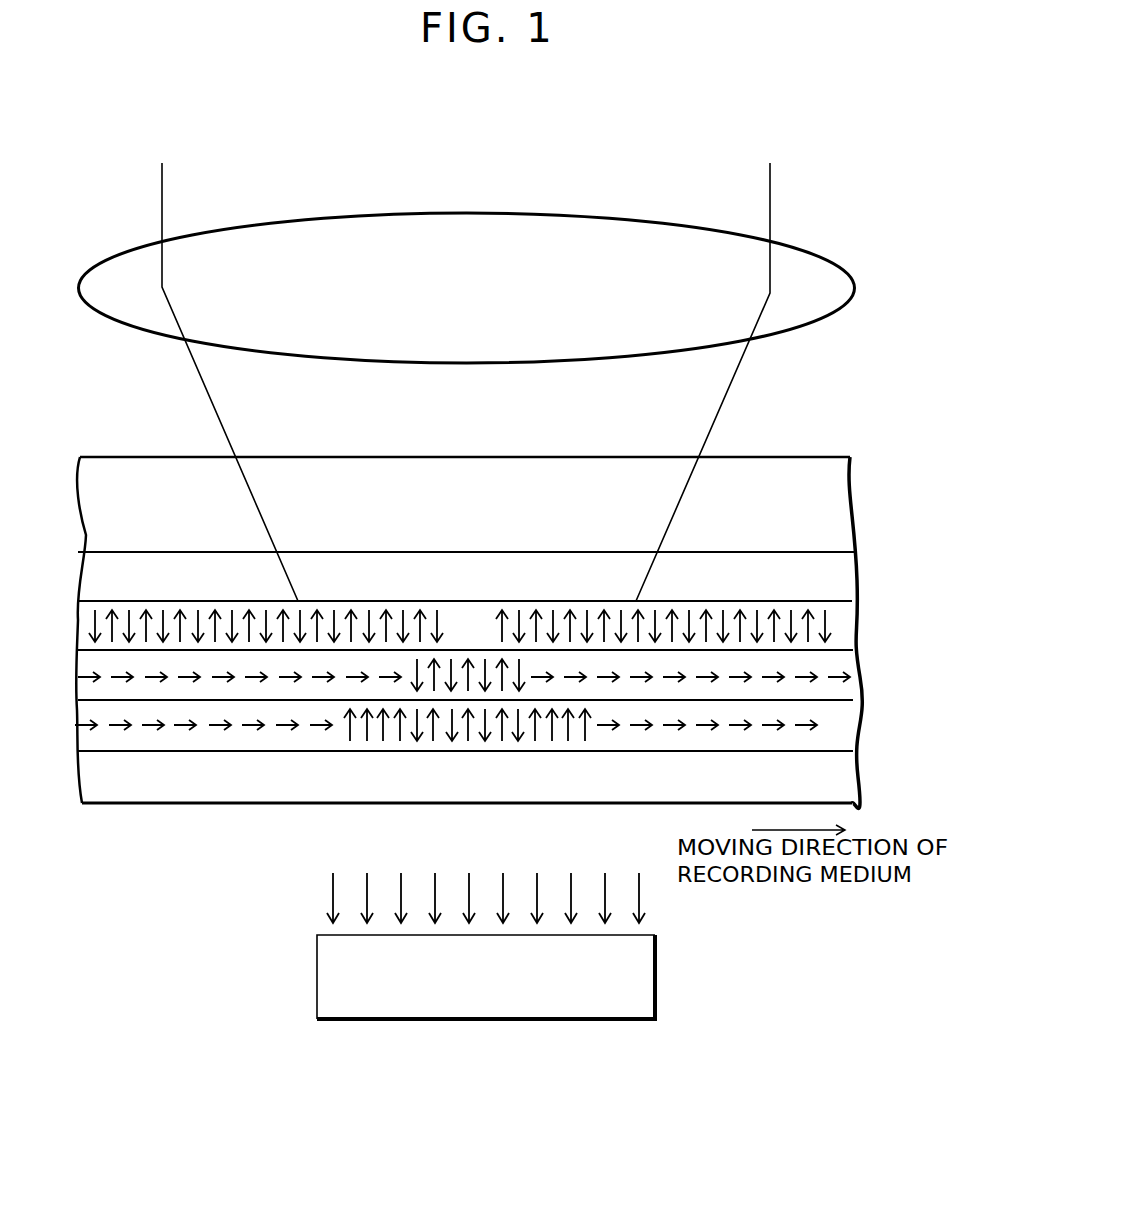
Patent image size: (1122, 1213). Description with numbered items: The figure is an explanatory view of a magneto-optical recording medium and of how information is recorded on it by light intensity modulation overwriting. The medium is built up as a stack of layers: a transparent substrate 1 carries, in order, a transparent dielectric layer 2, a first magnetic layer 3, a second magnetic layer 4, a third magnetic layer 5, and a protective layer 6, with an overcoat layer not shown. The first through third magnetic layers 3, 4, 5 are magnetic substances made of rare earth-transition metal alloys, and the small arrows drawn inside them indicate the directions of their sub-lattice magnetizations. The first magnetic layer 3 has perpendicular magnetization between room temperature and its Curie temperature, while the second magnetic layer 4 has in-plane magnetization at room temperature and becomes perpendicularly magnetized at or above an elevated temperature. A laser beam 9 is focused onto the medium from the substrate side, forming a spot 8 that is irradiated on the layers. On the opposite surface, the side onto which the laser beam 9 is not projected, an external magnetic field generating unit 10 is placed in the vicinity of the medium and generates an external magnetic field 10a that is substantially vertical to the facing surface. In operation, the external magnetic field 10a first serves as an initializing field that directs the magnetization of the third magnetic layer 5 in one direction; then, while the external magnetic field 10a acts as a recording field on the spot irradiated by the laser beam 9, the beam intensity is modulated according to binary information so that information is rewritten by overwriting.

The transparent substrate 1 is at (835, 492).
The transparent dielectric layer 2 is at (847, 580).
The first magnetic layer 3 is at (843, 635).
The second magnetic layer 4 is at (853, 690).
The third magnetic layer 5 is at (840, 737).
The protective layer 6 is at (845, 788).
The light beam spot 8 is at (833, 292).
The laser beam 9 is at (757, 210).
The external magnetic field generating unit 10 is at (657, 975).
The external magnetic field 10a is at (330, 890).